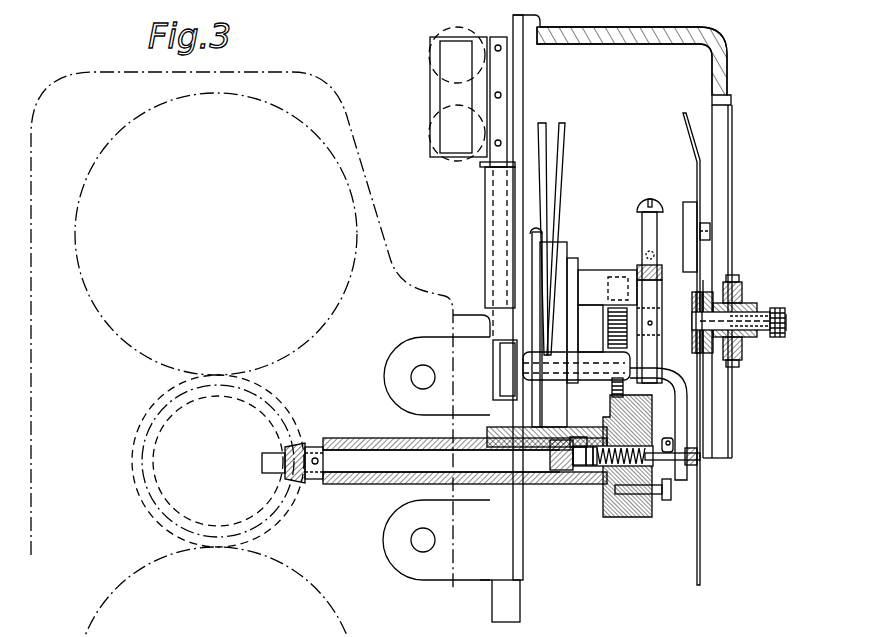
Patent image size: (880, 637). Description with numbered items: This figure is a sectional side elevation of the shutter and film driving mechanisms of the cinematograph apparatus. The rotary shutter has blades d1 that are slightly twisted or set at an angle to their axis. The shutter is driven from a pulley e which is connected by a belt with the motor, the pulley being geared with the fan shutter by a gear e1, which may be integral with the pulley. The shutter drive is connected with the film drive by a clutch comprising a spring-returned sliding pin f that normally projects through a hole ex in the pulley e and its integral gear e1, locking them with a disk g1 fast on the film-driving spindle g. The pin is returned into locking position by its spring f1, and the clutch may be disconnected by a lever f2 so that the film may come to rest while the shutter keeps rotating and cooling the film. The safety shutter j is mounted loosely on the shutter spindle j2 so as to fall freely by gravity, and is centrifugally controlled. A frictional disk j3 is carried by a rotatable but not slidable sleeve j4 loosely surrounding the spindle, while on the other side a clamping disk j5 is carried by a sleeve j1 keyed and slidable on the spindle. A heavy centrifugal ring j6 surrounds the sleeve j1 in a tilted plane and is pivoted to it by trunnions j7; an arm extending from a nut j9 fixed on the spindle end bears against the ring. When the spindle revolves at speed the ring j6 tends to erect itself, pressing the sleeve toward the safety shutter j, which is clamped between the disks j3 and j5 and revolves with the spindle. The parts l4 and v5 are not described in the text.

The lever f2 is at (493, 72).
The blades d1 is at (543, 140).
The plate l4 is at (572, 258).
The screw v5 is at (650, 235).
The gear e1 is at (620, 307).
The safety shutter j is at (697, 170).
The sleeve j4 is at (683, 312).
The frictional disk j3 is at (698, 292).
The sleeve j1 is at (752, 310).
The trunnions j7 is at (730, 282).
The centrifugal ring j6 is at (738, 302).
The shutter spindle j2 is at (757, 328).
The nut j9 is at (780, 336).
The clamping disk j5 is at (707, 347).
The film-driving spindle g is at (522, 465).
The spring f1 is at (618, 483).
The disk g1 is at (615, 492).
The hole ex is at (610, 537).
The pulley e is at (645, 495).
The sliding pin f is at (657, 490).